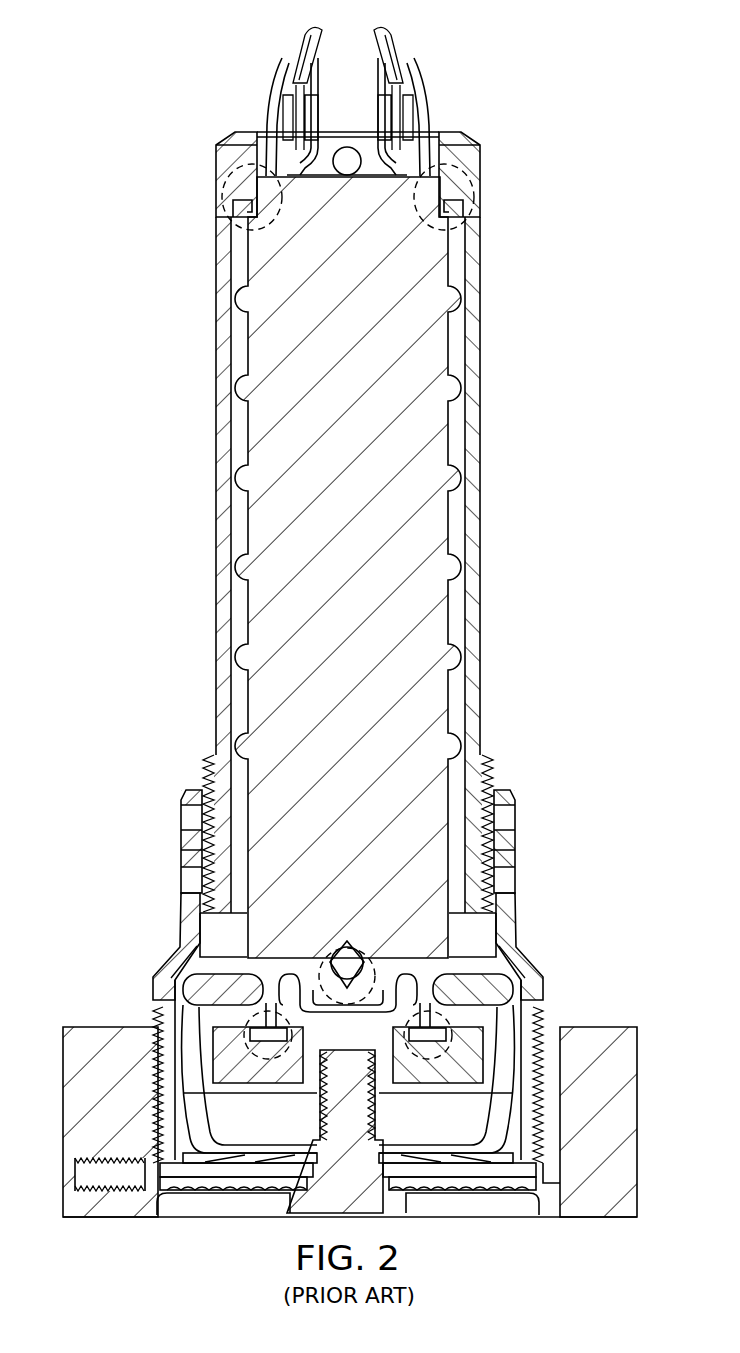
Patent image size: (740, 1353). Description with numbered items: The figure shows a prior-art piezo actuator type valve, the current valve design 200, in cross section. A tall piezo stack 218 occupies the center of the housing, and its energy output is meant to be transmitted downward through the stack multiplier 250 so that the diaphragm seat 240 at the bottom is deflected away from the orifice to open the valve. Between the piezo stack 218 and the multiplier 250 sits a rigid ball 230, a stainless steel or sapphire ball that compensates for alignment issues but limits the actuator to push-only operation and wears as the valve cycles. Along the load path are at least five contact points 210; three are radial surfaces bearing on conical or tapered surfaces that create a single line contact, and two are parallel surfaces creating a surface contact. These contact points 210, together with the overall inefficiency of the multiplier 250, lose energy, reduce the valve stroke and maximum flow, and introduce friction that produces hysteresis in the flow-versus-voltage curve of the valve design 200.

The current valve design 200 is at (116, 101).
The contact points 210 is at (238, 171).
The piezo stack 218 is at (372, 575).
The rigid ball 230 is at (344, 956).
The diaphragm seat 240 is at (478, 1224).
The stack multiplier 250 is at (193, 1092).